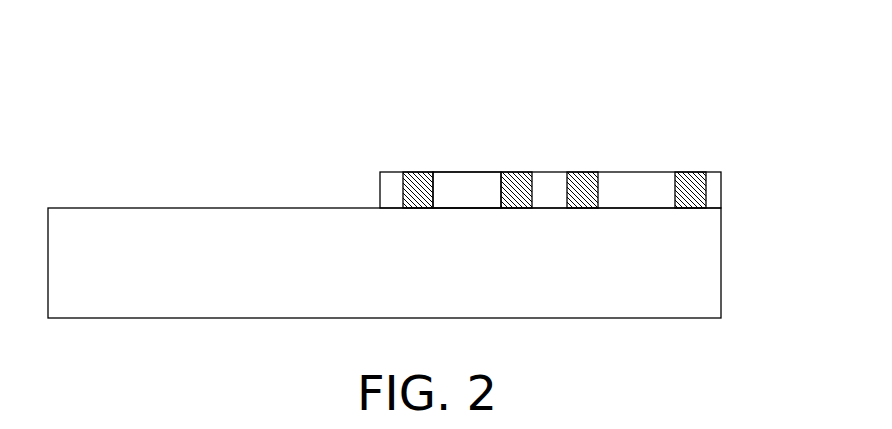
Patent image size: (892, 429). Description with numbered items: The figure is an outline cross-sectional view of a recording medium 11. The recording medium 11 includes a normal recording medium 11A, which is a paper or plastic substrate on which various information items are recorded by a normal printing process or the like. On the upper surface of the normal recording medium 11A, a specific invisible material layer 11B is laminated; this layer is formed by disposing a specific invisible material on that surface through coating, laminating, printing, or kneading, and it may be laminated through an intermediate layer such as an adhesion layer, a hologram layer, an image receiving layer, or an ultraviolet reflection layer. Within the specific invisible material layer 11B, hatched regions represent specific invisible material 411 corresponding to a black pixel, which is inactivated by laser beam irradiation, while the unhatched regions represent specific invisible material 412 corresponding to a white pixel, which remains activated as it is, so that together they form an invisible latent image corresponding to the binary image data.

The recording medium 11 is at (435, 170).
The normal recording medium 11A is at (730, 208).
The specific invisible material layer 11B is at (730, 173).
The specific invisible material 411 is at (623, 125).
The specific invisible material 412 is at (467, 180).